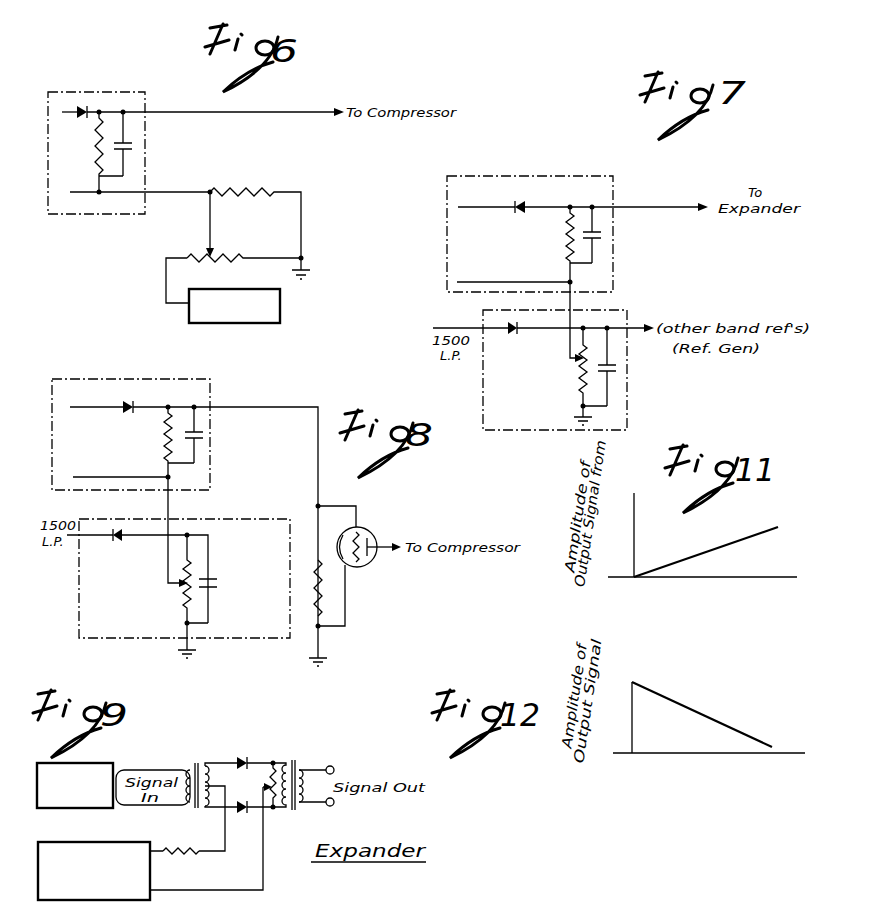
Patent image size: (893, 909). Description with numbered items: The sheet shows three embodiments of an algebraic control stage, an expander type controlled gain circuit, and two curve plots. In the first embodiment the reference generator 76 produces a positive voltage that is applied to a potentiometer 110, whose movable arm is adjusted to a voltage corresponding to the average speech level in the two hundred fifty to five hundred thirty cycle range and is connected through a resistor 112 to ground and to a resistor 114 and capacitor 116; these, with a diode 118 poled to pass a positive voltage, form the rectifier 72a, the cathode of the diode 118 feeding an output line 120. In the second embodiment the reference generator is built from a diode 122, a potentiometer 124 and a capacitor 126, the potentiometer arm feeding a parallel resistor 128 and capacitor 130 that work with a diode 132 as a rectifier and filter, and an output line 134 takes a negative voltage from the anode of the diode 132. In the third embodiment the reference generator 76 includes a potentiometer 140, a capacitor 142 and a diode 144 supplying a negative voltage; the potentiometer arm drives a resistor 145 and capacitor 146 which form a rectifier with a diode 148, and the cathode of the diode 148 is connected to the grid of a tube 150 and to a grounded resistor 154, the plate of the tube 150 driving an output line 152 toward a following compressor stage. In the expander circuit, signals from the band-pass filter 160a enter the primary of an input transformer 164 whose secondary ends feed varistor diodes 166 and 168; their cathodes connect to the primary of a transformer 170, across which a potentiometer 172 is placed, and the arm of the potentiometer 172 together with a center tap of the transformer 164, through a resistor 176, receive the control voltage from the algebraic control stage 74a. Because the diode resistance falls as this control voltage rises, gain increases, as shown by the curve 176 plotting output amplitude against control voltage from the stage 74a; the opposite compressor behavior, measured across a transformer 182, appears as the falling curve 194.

In FIG. 6, the diode 118 is at (106, 82).
In FIG. 6, the capacitor 116 is at (128, 144).
In FIG. 6, the resistor 114 is at (99, 148).
In FIG. 6, the resistor 112 is at (242, 192).
In FIG. 6, the potentiometer 110 is at (220, 257).
In FIG. 6, the output line 120 is at (306, 112).
In FIG. 6, the reference generator 76 is at (280, 305).
In FIG. 7, the reference generator 76 is at (627, 422).
In FIG. 8, the reference generator 76 is at (290, 640).
In FIG. 6, the rectifier 72a is at (176, 82).
In FIG. 7, the rectifier 72a is at (578, 176).
In FIG. 8, the rectifier 72a is at (212, 393).
In FIG. 7, the diode 132 is at (520, 205).
In FIG. 7, the resistor 128 is at (570, 246).
In FIG. 7, the capacitor 130 is at (600, 240).
In FIG. 7, the algebraic control stage 74a is at (642, 200).
In FIG. 9, the algebraic control stage 74a is at (150, 884).
In FIG. 11, the algebraic control stage 74a is at (730, 614).
In FIG. 12, the algebraic control stage 74a is at (728, 785).
In FIG. 7, the output line 134 is at (656, 212).
In FIG. 7, the diode 122 is at (506, 326).
In FIG. 7, the potentiometer 124 is at (578, 393).
In FIG. 7, the capacitor 126 is at (614, 372).
In FIG. 8, the diode 148 is at (133, 403).
In FIG. 8, the resistor 145 is at (163, 446).
In FIG. 8, the capacitor 146 is at (203, 442).
In FIG. 8, the diode 144 is at (114, 530).
In FIG. 8, the potentiometer 140 is at (183, 603).
In FIG. 8, the capacitor 142 is at (217, 588).
In FIG. 8, the tube 150 is at (365, 531).
In FIG. 8, the output line 152 is at (378, 553).
In FIG. 8, the resistor 154 is at (322, 600).
In FIG. 9, the band-pass filter 160a is at (113, 765).
In FIG. 9, the input transformer 164 is at (197, 762).
In FIG. 9, the diode 166 is at (240, 756).
In FIG. 9, the diode 168 is at (240, 816).
In FIG. 9, the transformer 170 is at (295, 761).
In FIG. 11, the transformer 170 is at (609, 512).
In FIG. 9, the potentiometer 172 is at (268, 790).
In FIG. 9, the resistor 176 is at (170, 849).
In FIG. 11, the resistor 176 is at (745, 540).
In FIG. 12, the transformer 182 is at (608, 708).
In FIG. 12, the curve 194 is at (700, 704).